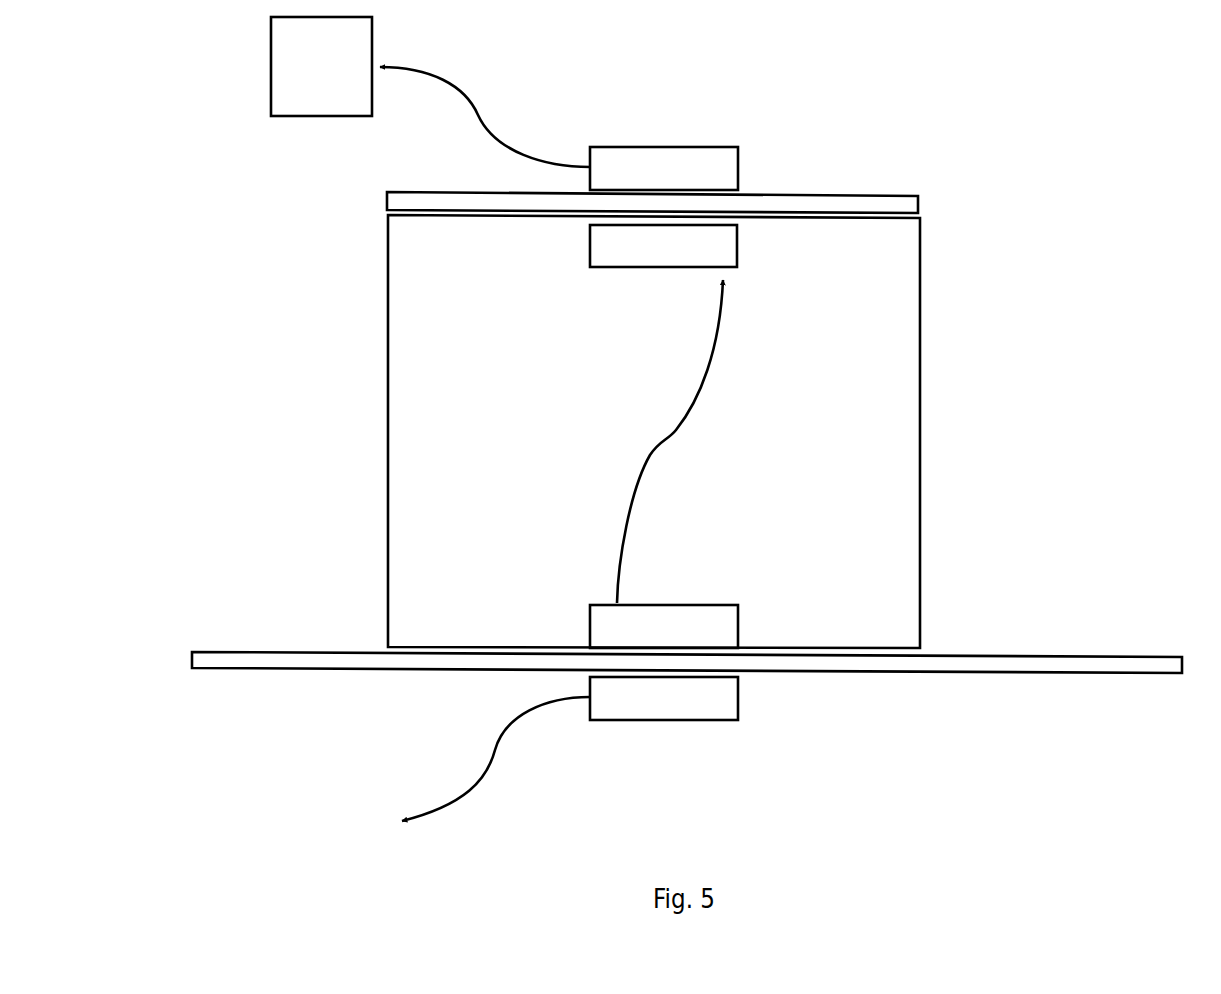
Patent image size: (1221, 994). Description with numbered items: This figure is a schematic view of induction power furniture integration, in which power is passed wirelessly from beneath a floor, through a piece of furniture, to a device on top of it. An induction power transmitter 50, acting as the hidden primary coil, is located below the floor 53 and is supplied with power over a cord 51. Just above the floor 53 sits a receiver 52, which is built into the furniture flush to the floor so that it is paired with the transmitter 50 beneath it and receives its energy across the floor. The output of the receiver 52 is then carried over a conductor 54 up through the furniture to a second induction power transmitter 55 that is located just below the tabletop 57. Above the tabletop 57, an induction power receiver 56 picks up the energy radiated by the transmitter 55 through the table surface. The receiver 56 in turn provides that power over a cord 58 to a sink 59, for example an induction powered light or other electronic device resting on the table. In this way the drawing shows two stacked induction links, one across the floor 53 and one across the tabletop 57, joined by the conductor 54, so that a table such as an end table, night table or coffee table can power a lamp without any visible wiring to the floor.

The induction power transmitter 50 is at (676, 712).
The cord 51 is at (492, 772).
The receiver 52 is at (702, 627).
The floor 53 is at (334, 657).
The conductor 54 is at (628, 513).
The induction power transmitter 55 is at (640, 253).
The induction power receiver 56 is at (710, 157).
The tabletop 57 is at (835, 205).
The cord 58 is at (467, 107).
The sink 59 is at (285, 89).